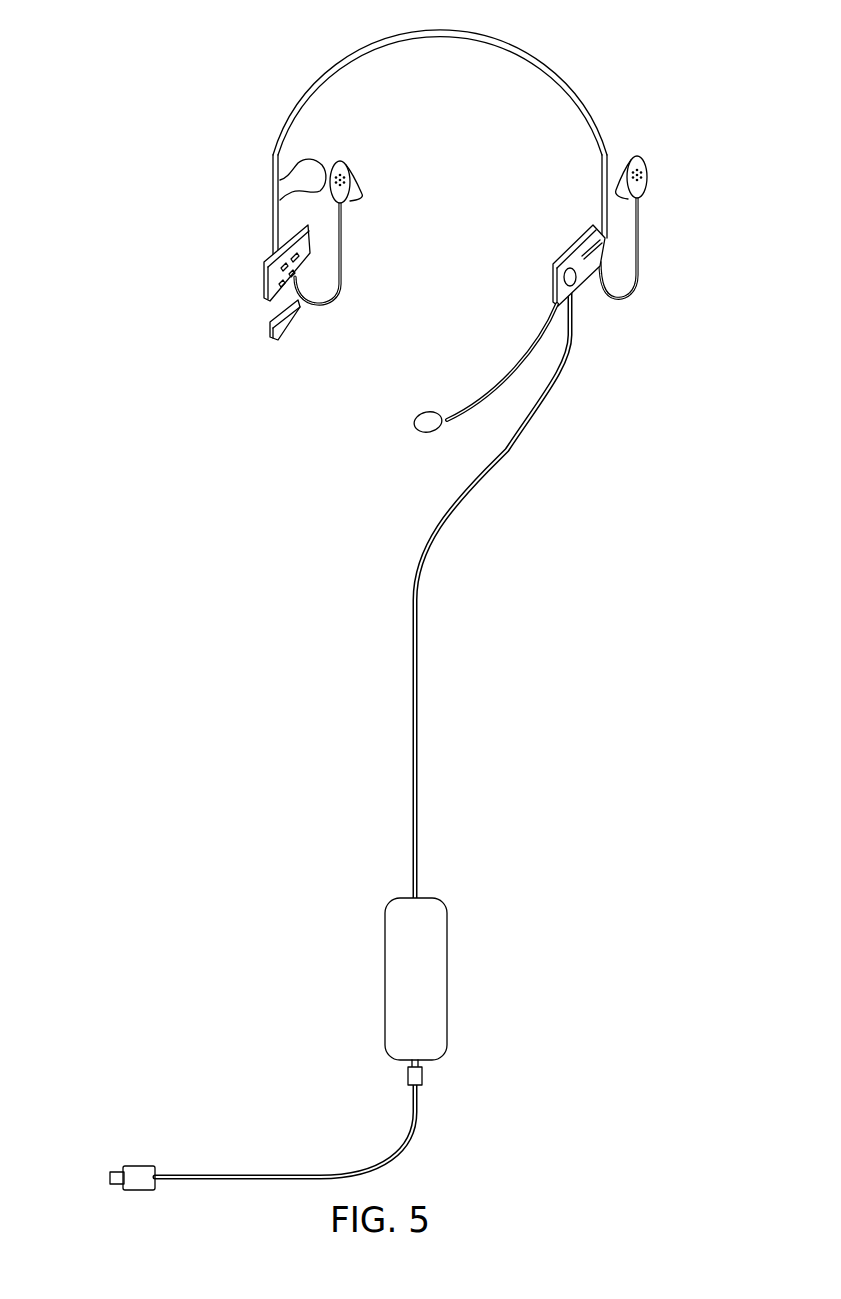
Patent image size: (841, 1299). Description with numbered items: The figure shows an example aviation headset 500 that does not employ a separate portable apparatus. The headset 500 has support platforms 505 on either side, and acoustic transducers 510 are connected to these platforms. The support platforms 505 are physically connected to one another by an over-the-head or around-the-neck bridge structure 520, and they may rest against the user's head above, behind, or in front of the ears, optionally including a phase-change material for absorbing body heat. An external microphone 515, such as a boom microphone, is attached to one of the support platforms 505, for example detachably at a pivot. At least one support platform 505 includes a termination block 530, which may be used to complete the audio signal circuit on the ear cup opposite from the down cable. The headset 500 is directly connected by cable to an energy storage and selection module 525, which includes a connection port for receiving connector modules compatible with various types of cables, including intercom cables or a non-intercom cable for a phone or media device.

The aviation headset 500 is at (142, 37).
The support platform 505 is at (264, 283).
The acoustic transducer 510 is at (347, 167).
The external microphone 515 is at (430, 413).
The bridge structure 520 is at (445, 28).
The energy storage and selection module 525 is at (448, 978).
The termination block 530 is at (268, 333).